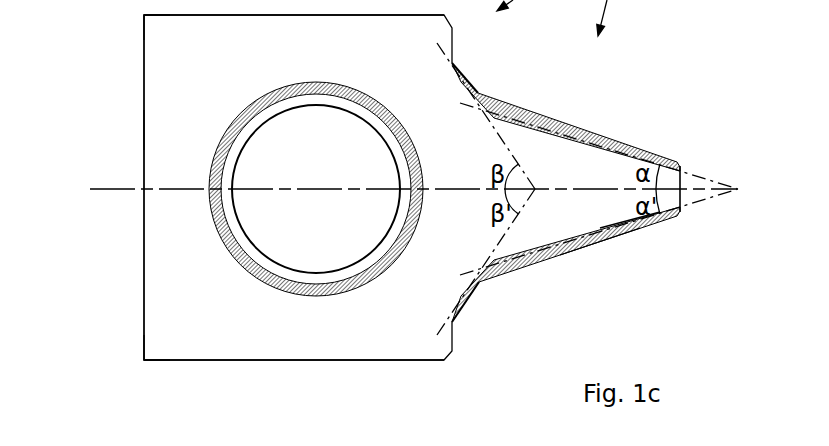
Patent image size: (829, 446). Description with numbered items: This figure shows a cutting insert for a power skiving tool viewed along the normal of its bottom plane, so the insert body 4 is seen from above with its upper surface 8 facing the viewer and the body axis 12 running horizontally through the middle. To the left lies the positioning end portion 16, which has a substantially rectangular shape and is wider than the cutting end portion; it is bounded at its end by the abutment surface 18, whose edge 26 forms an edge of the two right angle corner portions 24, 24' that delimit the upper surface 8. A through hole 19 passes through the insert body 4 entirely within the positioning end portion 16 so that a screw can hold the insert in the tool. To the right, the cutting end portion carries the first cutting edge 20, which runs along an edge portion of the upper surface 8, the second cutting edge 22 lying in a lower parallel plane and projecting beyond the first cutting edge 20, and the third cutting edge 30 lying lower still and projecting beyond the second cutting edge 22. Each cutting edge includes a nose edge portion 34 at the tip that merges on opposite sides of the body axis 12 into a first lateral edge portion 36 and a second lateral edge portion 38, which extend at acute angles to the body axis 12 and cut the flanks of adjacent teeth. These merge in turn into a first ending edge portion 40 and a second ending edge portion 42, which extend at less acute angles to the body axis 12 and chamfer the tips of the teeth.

The insert body 4 is at (415, 340).
The upper surface 8 is at (237, 307).
The body axis 12 is at (97, 190).
The positioning end portion 16 is at (290, 400).
The abutment surface 18 is at (132, 91).
The through hole 19 is at (318, 238).
The first cutting edge 20 is at (557, 251).
The second cutting edge 22 is at (587, 248).
The right angle corner portion 24 is at (181, 39).
The right angle corner portion 24' is at (168, 325).
The edge of the abutment surface 26 is at (144, 130).
The third cutting edge 30 is at (614, 238).
The nose edge portion 34 is at (681, 186).
The first lateral edge portion 36 is at (617, 143).
The second lateral edge portion 38 is at (640, 228).
The first ending edge portion 40 is at (465, 80).
The second ending edge portion 42 is at (463, 302).